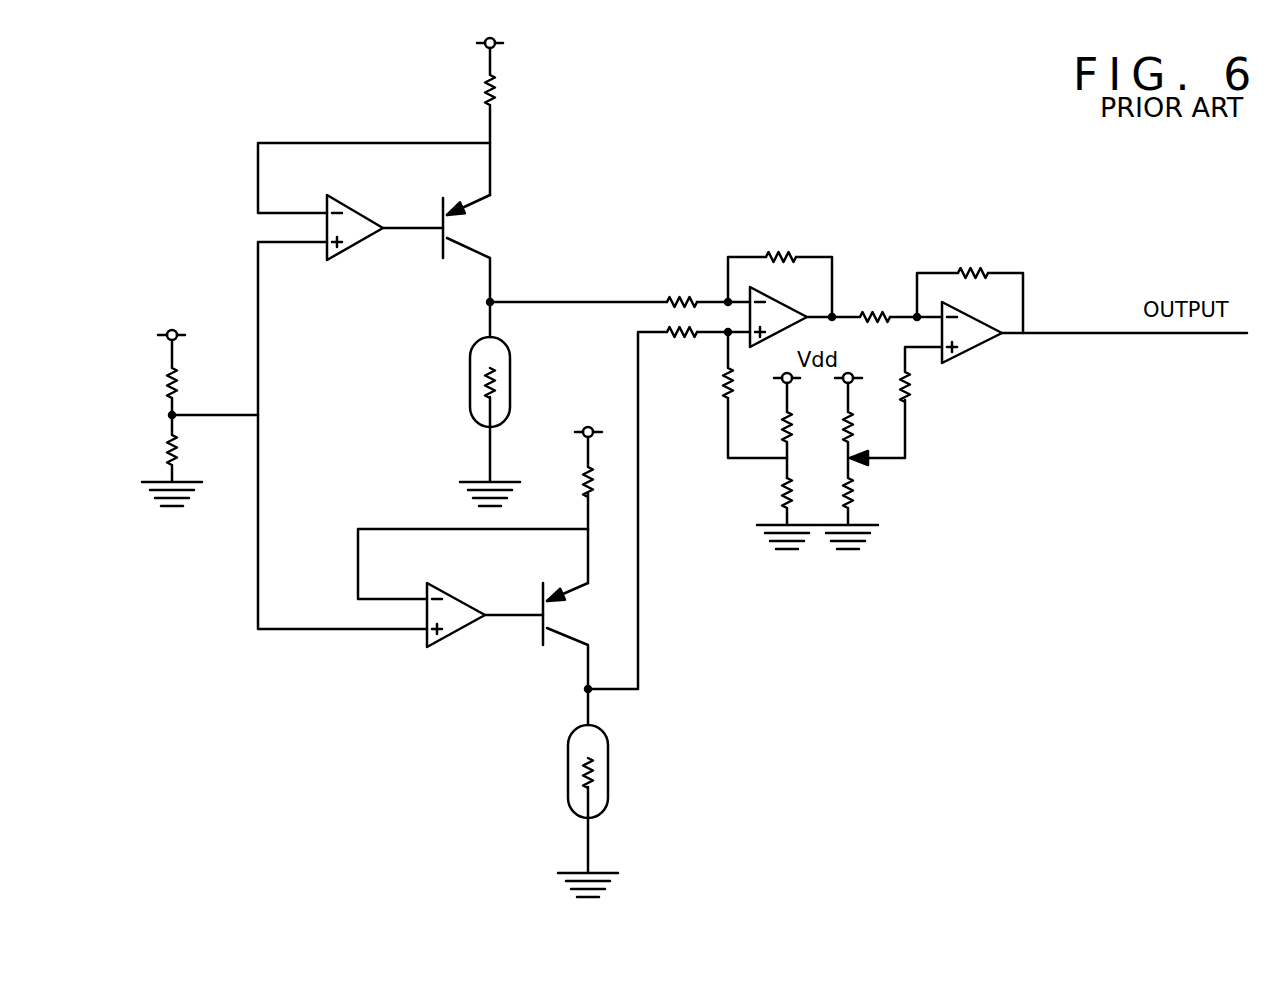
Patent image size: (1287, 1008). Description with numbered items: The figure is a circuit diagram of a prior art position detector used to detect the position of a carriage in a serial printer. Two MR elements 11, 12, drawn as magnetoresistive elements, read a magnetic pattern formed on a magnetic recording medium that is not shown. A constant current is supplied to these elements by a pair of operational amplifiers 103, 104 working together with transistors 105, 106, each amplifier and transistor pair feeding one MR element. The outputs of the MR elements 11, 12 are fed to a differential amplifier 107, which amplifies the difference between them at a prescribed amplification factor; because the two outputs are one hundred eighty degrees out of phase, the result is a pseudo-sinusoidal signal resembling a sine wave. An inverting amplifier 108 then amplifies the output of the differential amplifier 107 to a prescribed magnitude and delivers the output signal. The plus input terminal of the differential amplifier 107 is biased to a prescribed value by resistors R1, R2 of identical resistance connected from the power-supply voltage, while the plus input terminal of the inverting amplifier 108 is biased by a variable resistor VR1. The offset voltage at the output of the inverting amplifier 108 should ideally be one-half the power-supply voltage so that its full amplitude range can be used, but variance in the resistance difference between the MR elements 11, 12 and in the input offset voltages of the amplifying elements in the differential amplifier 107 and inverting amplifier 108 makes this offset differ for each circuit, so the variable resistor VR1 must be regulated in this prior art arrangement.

The operational amplifier 103 is at (327, 255).
The operational amplifier 104 is at (447, 637).
The transistor 105 is at (467, 251).
The transistor 106 is at (562, 637).
The differential amplifier 107 is at (805, 297).
The inverting amplifier 108 is at (974, 355).
The MR element 11 is at (471, 352).
The MR element 12 is at (608, 752).
The resistor R1 is at (781, 431).
The resistor R2 is at (781, 496).
The variable resistor VR1 is at (865, 466).